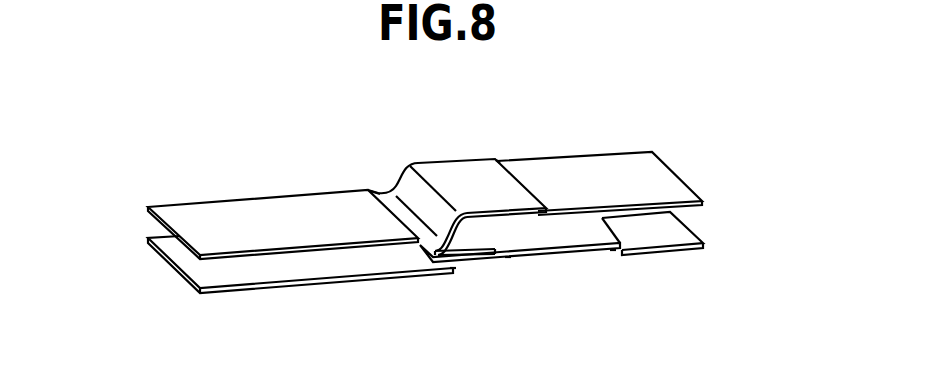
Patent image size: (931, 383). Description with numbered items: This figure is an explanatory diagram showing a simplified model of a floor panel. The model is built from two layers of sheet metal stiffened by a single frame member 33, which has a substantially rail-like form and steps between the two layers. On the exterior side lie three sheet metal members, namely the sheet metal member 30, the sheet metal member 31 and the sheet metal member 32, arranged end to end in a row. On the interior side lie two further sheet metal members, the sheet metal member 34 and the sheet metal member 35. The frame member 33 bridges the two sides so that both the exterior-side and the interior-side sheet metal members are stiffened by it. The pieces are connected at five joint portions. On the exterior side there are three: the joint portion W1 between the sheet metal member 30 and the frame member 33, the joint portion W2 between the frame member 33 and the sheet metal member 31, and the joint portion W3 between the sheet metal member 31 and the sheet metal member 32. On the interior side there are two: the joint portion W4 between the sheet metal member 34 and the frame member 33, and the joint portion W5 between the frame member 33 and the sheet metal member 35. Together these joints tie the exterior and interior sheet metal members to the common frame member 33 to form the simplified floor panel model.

The sheet metal member 30 is at (285, 288).
The sheet metal member 31 is at (563, 253).
The sheet metal member 32 is at (678, 252).
The frame member 33 is at (445, 165).
The sheet metal member 34 is at (253, 207).
The sheet metal member 35 is at (598, 160).
The joint portion W1 is at (457, 268).
The joint portion W2 is at (508, 258).
The joint portion W3 is at (613, 252).
The joint portion W4 is at (380, 192).
The joint portion W5 is at (517, 164).